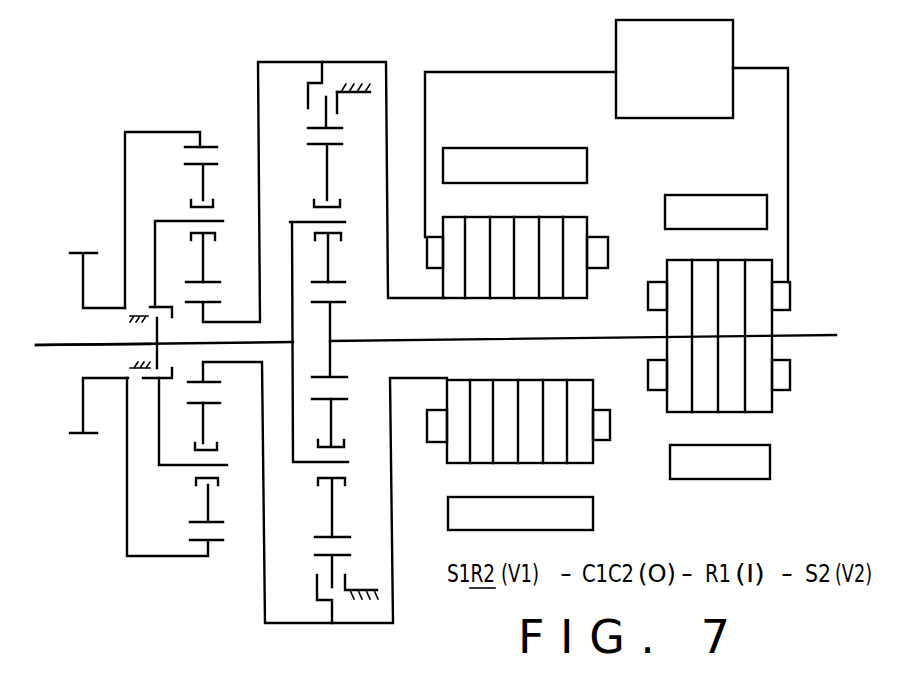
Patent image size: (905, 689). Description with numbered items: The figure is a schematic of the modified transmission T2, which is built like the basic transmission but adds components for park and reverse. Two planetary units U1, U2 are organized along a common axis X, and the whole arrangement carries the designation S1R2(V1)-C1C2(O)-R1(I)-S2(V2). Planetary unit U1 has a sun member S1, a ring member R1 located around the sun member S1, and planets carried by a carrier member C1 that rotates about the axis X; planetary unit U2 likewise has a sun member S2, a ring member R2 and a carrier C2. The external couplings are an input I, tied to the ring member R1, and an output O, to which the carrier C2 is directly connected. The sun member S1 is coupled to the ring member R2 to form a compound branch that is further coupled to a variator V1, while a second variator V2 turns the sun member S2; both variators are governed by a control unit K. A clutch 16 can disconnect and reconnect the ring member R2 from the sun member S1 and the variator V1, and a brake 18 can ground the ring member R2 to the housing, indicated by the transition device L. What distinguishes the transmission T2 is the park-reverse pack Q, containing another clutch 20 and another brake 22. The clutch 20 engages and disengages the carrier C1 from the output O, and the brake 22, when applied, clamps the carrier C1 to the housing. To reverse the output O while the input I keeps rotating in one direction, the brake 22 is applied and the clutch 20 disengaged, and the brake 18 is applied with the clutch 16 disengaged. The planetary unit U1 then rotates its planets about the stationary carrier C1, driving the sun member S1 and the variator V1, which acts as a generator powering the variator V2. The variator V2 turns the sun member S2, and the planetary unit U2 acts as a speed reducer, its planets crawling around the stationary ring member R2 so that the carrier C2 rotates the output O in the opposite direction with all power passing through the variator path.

The modified transmission T2 is at (142, 107).
The ring member R1 is at (208, 147).
The carrier member C1 is at (162, 220).
The input I is at (83, 253).
The output O is at (68, 343).
The park-reverse pack Q is at (92, 360).
The brake 22 is at (143, 368).
The clutch 20 is at (172, 368).
The planetary unit U1 is at (172, 574).
The planetary unit U2 is at (291, 637).
The sun member S1 is at (237, 320).
The sun member S2 is at (333, 326).
The carrier C2 is at (292, 440).
The ring member R2 is at (317, 132).
The clutch 16 is at (308, 95).
The transition device L is at (360, 74).
The brake 18 is at (338, 105).
The control unit K is at (688, 79).
The common axis X is at (786, 336).
The variator V1 is at (596, 478).
The variator V2 is at (786, 414).